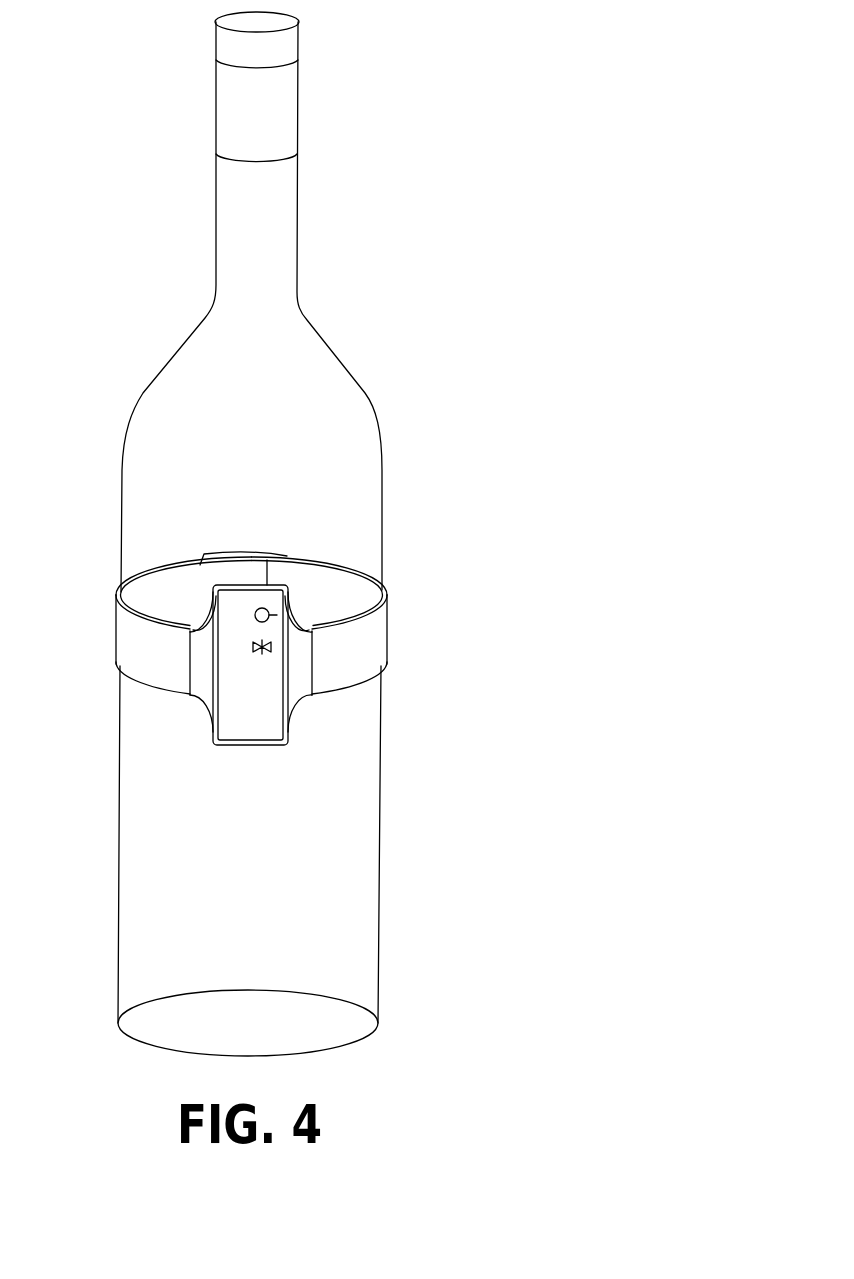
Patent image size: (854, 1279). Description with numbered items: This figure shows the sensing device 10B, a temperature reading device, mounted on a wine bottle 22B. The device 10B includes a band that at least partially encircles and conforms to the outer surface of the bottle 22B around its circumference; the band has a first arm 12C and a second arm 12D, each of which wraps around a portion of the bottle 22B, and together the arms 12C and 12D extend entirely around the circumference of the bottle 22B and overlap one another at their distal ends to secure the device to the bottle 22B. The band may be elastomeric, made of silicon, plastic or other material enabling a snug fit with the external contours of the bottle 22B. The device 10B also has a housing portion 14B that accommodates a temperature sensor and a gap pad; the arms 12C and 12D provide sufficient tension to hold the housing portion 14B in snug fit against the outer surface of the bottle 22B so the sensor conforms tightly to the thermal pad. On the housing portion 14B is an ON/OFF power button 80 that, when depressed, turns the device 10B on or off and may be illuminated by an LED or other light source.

The bottle 22B is at (378, 422).
The sensing device 10B is at (284, 631).
The first arm 12C is at (135, 654).
The second arm 12D is at (362, 647).
The housing portion 14B is at (362, 631).
The ON/OFF power button 80 is at (267, 609).